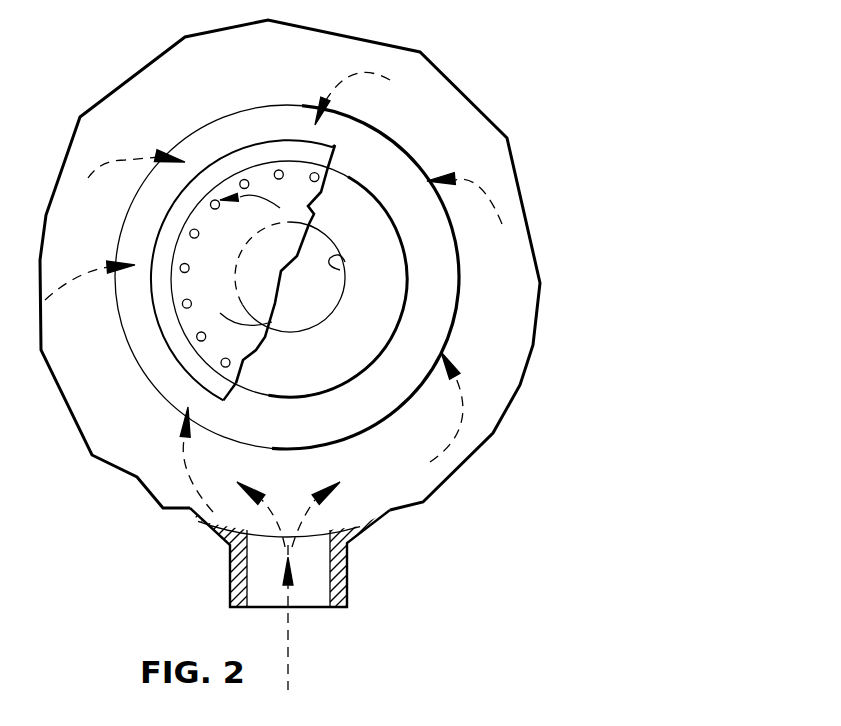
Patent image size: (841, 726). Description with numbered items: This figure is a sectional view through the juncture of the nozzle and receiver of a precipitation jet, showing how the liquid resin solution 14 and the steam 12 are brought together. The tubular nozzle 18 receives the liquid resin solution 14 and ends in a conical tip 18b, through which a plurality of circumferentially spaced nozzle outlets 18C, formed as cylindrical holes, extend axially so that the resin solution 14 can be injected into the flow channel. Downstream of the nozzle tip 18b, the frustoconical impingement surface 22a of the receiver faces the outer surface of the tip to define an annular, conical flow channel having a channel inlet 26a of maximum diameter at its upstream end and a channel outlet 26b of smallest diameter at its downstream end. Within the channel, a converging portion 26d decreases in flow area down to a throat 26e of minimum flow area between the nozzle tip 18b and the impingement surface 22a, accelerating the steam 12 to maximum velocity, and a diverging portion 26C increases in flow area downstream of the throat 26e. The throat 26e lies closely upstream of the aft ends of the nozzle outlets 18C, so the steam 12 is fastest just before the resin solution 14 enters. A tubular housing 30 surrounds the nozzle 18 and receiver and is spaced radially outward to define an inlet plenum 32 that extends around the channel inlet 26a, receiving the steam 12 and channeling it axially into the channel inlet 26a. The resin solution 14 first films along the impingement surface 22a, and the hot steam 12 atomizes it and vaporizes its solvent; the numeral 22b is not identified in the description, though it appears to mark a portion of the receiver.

The steam 12 is at (113, 160).
The liquid resin solution 14 is at (222, 244).
The nozzle 18 is at (226, 120).
The conical tip 18b is at (318, 205).
The nozzle outlets 18C is at (248, 180).
The impingement surface 22a is at (455, 279).
The inlet opening 22b is at (330, 306).
The channel inlet 26a is at (142, 343).
The channel outlet 26b is at (343, 262).
The diverging portion 26C is at (305, 388).
The converging portion 26d is at (285, 438).
The throat 26e is at (334, 380).
The tubular housing 30 is at (357, 540).
The inlet plenum 32 is at (158, 461).